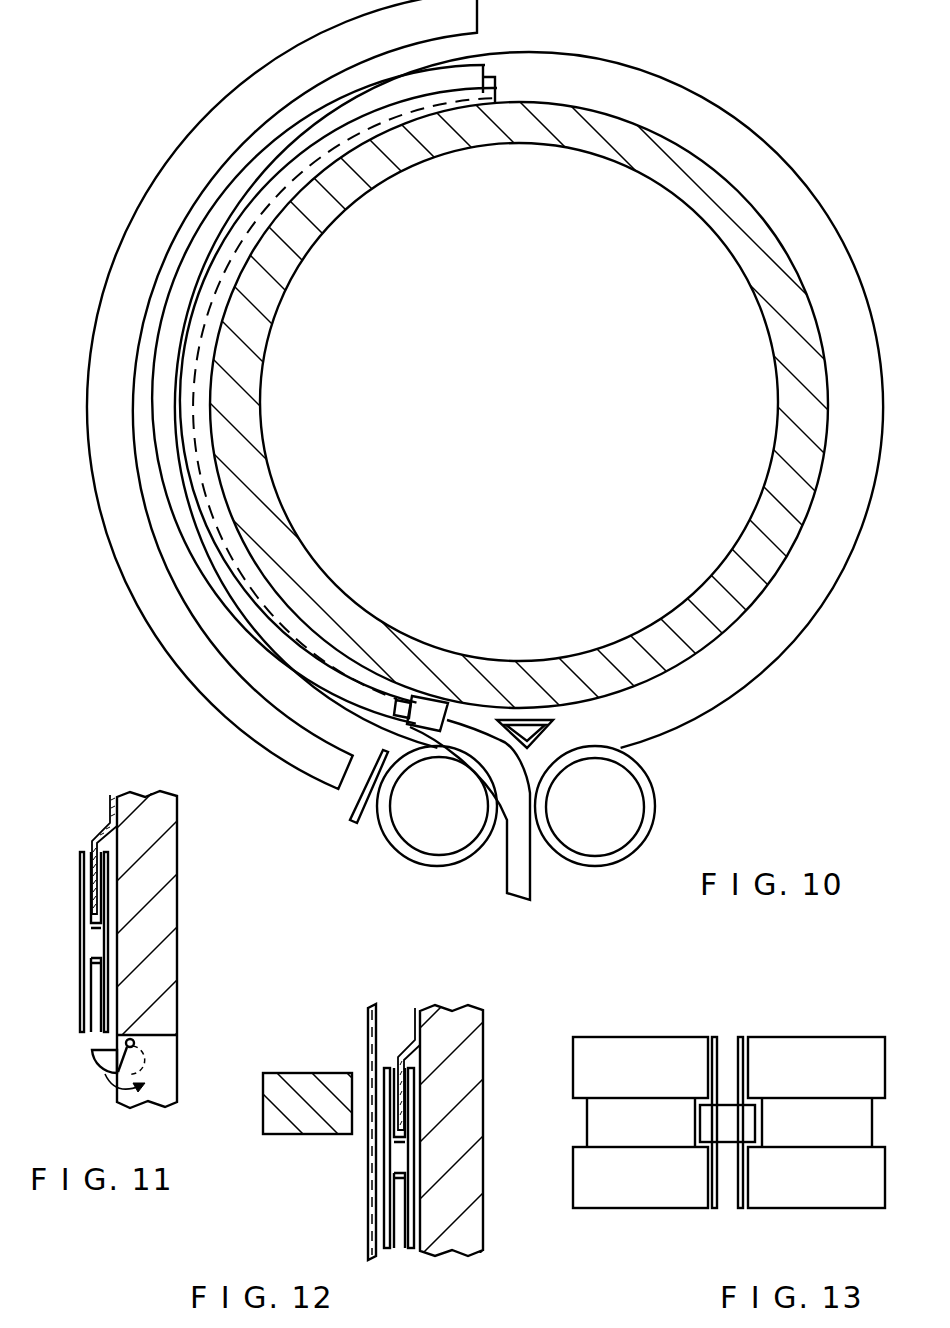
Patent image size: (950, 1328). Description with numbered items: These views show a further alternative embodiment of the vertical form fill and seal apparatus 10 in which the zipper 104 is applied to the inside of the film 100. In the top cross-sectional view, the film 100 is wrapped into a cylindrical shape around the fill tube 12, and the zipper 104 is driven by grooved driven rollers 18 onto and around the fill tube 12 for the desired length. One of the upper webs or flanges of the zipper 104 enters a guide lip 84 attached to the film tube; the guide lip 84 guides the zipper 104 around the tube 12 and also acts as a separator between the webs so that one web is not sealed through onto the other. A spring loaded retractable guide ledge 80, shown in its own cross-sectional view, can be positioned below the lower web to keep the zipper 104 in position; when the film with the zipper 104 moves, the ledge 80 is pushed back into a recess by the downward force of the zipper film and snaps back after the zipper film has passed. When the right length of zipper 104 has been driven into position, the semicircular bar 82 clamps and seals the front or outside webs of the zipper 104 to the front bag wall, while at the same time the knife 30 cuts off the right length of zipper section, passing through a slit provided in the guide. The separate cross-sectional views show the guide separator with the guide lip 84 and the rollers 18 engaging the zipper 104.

In FIG. 10, the vertical form fill and seal apparatus 10 is at (722, 62).
In FIG. 10, the fill tube 12 is at (762, 525).
In FIG. 11, the fill tube 12 is at (160, 812).
In FIG. 12, the fill tube 12 is at (458, 1030).
In FIG. 10, the grooved driven rollers 18 is at (547, 818).
In FIG. 13, the grooved driven rollers 18 is at (775, 1057).
In FIG. 10, the knife 30 is at (355, 818).
In FIG. 11, the retractable guide ledge 80 is at (97, 1066).
In FIG. 10, the semicircular bar 82 is at (148, 604).
In FIG. 12, the semicircular bar 82 is at (335, 1120).
In FIG. 12, the guide lip 84 is at (402, 1042).
In FIG. 10, the film 100 is at (772, 146).
In FIG. 11, the zipper 104 is at (83, 940).
In FIG. 12, the zipper 104 is at (412, 1255).
In FIG. 13, the zipper 104 is at (735, 1212).